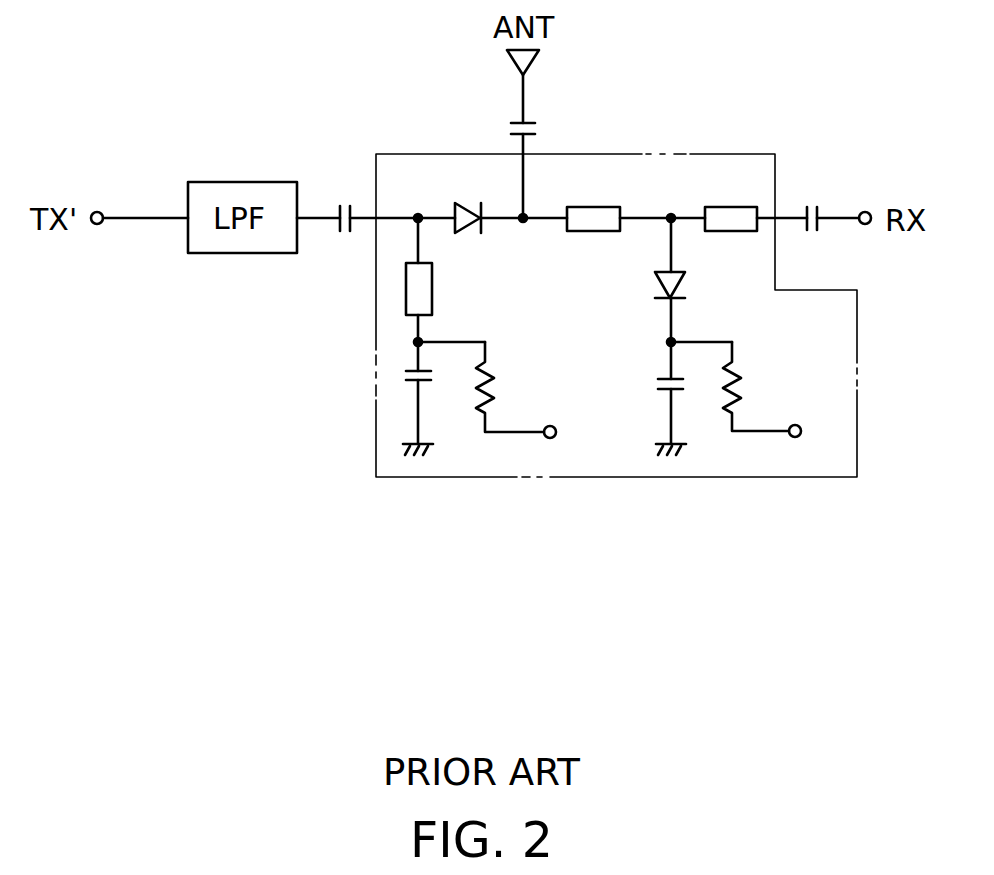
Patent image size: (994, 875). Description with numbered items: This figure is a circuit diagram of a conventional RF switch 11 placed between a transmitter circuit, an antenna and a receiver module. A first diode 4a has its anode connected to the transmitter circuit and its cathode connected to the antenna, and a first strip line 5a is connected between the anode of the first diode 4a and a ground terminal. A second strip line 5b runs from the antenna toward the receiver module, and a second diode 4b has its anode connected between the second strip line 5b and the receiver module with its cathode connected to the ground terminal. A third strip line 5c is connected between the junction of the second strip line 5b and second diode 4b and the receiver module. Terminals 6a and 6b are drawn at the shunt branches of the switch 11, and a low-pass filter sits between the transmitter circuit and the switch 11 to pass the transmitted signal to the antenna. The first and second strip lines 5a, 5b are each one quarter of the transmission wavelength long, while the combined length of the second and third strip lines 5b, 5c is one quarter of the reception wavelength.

The first diode 4a is at (473, 203).
The second diode 4b is at (653, 283).
The first strip line 5a is at (432, 292).
The second strip line 5b is at (597, 232).
The third strip line 5c is at (732, 233).
The first control terminal 6a is at (509, 395).
The second control terminal 6b is at (758, 395).
The RF switch 11 is at (575, 478).